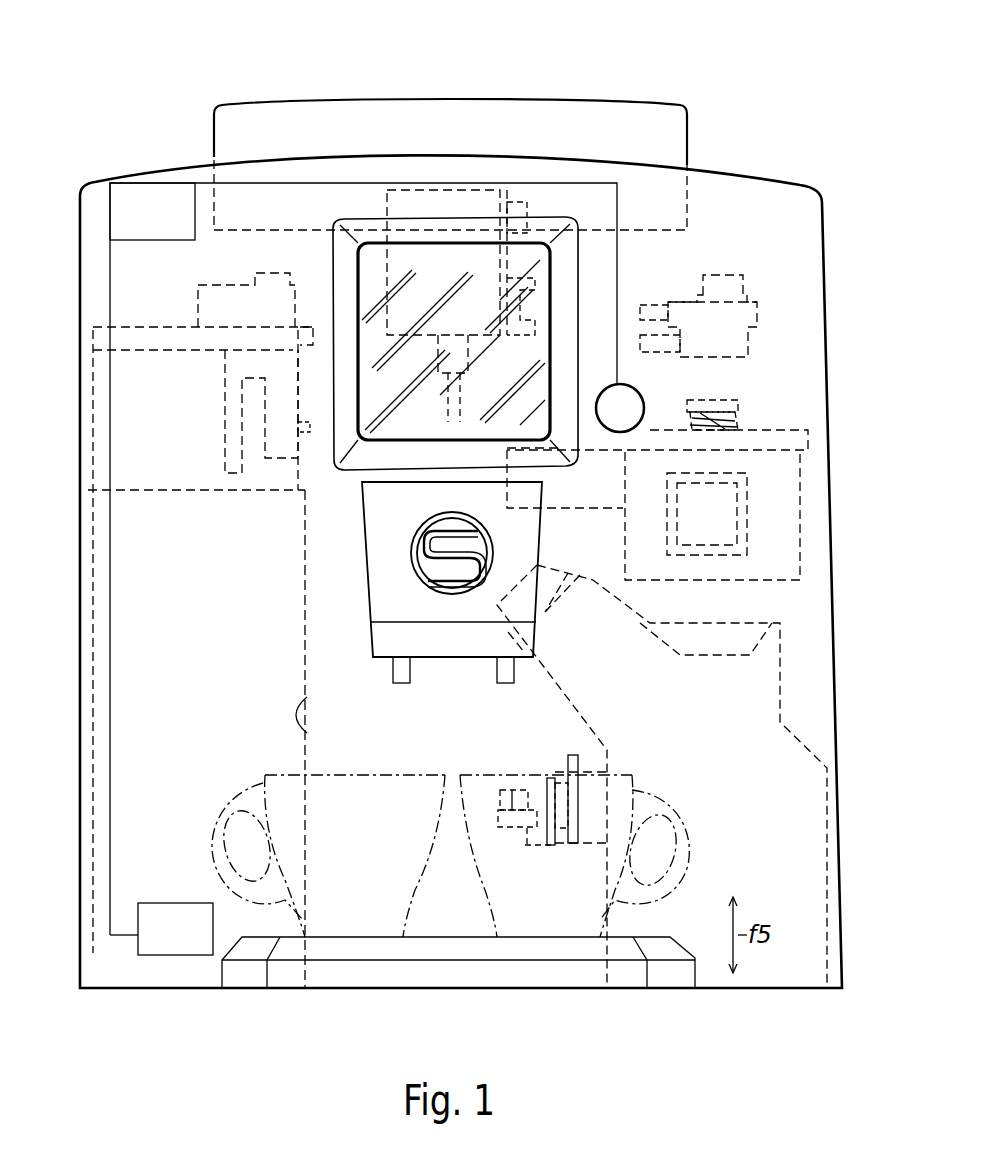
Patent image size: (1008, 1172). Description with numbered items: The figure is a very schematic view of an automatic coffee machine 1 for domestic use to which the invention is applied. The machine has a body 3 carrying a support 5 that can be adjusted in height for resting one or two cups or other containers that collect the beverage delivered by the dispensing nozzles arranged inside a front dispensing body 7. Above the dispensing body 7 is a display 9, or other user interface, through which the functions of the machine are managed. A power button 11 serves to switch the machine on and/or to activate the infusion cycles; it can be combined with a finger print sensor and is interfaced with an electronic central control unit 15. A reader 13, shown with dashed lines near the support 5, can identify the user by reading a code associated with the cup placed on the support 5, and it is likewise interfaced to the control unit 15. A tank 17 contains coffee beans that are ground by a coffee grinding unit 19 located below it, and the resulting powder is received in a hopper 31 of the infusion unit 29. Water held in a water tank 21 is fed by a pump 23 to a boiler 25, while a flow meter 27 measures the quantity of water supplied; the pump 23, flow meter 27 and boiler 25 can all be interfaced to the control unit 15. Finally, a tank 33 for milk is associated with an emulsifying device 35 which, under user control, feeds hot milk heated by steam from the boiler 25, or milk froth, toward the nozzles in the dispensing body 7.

The automatic machine 1 is at (707, 114).
The body 3 is at (840, 906).
The support 5 is at (443, 948).
The front dispensing body 7 is at (382, 573).
The display 9 is at (465, 322).
The power button 11 is at (628, 408).
The reader 13 is at (168, 917).
The electronic central control unit 15 is at (158, 233).
The tank 17 is at (347, 102).
The coffee grinding unit 19 is at (740, 422).
The water tank 21 is at (317, 720).
The pump 23 is at (530, 798).
The boiler 25 is at (468, 190).
The flow meter 27 is at (732, 273).
The infusion unit 29 is at (785, 719).
The hopper 31 is at (720, 637).
The tank for the milk 33 is at (132, 407).
The emulsifying device 35 is at (233, 286).